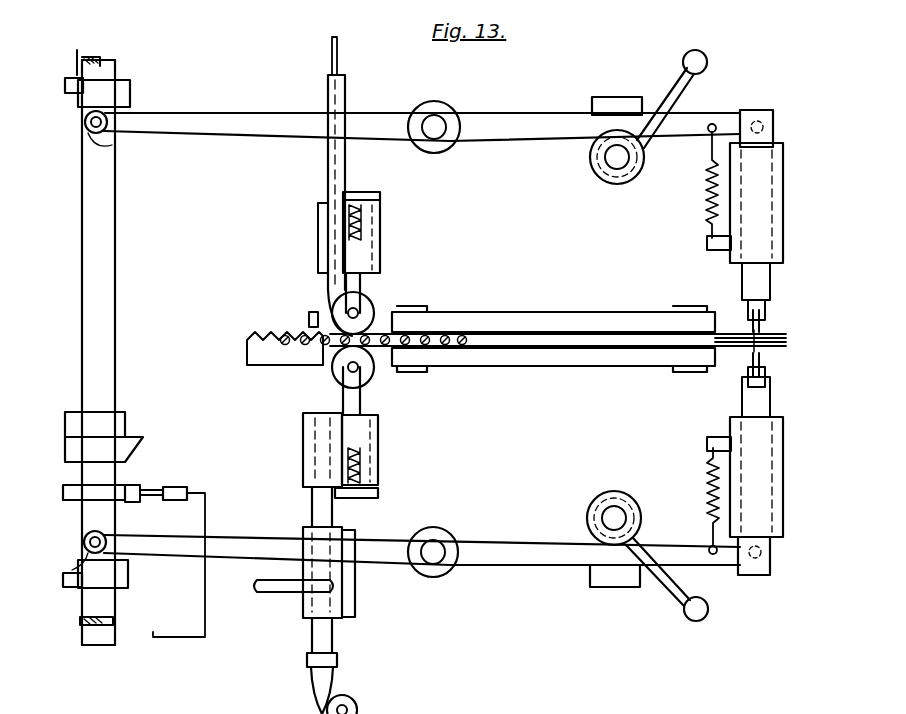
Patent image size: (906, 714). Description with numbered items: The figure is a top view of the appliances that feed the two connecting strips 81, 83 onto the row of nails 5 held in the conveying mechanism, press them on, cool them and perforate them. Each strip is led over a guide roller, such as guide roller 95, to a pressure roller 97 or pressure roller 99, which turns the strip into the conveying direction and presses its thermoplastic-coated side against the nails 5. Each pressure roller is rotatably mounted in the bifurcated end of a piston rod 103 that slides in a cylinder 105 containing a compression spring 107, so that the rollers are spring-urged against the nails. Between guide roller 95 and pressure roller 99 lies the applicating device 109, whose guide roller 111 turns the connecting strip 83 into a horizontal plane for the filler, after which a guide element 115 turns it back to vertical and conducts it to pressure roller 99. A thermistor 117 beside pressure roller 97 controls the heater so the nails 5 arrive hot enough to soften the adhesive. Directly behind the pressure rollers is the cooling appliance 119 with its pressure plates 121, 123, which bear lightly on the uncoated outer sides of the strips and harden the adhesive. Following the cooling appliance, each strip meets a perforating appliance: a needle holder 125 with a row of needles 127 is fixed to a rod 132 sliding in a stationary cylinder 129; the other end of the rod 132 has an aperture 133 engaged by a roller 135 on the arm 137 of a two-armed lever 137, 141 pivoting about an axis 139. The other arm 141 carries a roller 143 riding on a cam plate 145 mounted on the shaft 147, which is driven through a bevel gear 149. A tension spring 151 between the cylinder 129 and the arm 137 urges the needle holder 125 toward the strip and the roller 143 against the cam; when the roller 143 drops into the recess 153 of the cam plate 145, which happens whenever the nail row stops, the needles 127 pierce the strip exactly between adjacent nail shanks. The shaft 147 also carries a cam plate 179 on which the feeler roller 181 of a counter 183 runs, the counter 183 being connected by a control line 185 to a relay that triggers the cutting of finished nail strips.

The nails 5 is at (290, 334).
The connecting strip 81 is at (336, 52).
The connecting strip 83 is at (493, 353).
The guide roller 95 is at (355, 702).
The pressure roller 97 is at (372, 310).
The pressure roller 99 is at (366, 376).
The piston rod 103 is at (360, 288).
The cylinder 105 is at (381, 220).
The compression spring 107 is at (368, 190).
The applicating device 109 is at (355, 603).
The guide roller 111 is at (310, 660).
The guide element 115 is at (304, 407).
The thermistor 117 is at (308, 316).
The cooling appliance 119 is at (583, 312).
The pressure plate 121 is at (540, 320).
The pressure plate 123 is at (540, 363).
The needle holder 125 is at (748, 312).
The needles 127 is at (752, 336).
The cylinder 129 is at (740, 172).
The rod 132 is at (740, 200).
The aperture 133 is at (742, 118).
The roller 135 is at (757, 122).
The arm 137 is at (536, 115).
The axis 139 is at (434, 118).
The arm 141 is at (242, 118).
The roller 143 is at (106, 140).
The cam plate 145 is at (120, 93).
The shaft 147 is at (103, 194).
The bevel gear 149 is at (128, 445).
The tension spring 151 is at (705, 215).
The recess 153 is at (80, 650).
The cam plate 179 is at (103, 490).
The feeler roller 181 is at (137, 487).
The counter 183 is at (178, 493).
The control line 185 is at (176, 640).